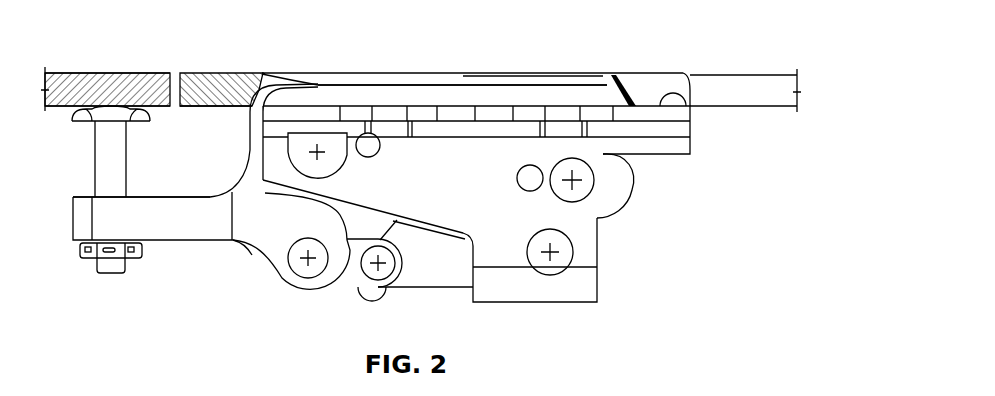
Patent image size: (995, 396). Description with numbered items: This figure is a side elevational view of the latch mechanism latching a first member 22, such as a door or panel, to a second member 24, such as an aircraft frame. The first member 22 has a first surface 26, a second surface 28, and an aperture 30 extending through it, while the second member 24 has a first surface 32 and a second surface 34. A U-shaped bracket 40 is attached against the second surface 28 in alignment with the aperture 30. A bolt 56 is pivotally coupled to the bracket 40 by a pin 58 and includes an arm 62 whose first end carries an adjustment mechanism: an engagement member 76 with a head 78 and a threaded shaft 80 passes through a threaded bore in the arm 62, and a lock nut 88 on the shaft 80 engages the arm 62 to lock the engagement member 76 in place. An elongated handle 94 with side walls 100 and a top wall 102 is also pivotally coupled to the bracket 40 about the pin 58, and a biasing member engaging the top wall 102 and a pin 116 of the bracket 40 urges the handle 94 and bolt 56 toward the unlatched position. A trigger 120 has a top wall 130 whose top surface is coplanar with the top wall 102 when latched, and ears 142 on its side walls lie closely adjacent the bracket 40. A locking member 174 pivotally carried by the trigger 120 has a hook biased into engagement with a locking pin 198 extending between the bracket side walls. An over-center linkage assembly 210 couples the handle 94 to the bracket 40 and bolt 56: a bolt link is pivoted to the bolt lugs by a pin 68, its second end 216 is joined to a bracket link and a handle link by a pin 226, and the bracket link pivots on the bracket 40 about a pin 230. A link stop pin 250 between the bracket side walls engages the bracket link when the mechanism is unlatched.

The second member 24 is at (70, 65).
The first surface 32 is at (142, 72).
The second surface 34 is at (57, 108).
The first surface 26 is at (188, 72).
The second surface 28 is at (233, 107).
The first member 22 is at (246, 64).
The handle 94 is at (336, 64).
The top wall 102 is at (396, 72).
The trigger 120 is at (501, 64).
The top wall 130 is at (554, 72).
The side walls 100 is at (595, 97).
The ear 142 is at (647, 87).
The aperture 30 is at (682, 75).
The head 78 is at (82, 121).
The engagement member 76 is at (128, 145).
The threaded shaft 80 is at (95, 167).
The arm 62 is at (200, 228).
The lock nut 88 is at (80, 258).
The bolt 56 is at (240, 252).
The bracket 40 is at (582, 310).
The locking pin 198 is at (622, 203).
The locking member 174 is at (623, 222).
The link stop pin 250 is at (523, 180).
The pin 58 is at (327, 163).
The pin 116 is at (373, 148).
The pin 68 is at (302, 245).
The pin 226 is at (395, 267).
The second end 216 is at (397, 284).
The over-center linkage assembly 210 is at (370, 306).
The pin 230 is at (553, 270).